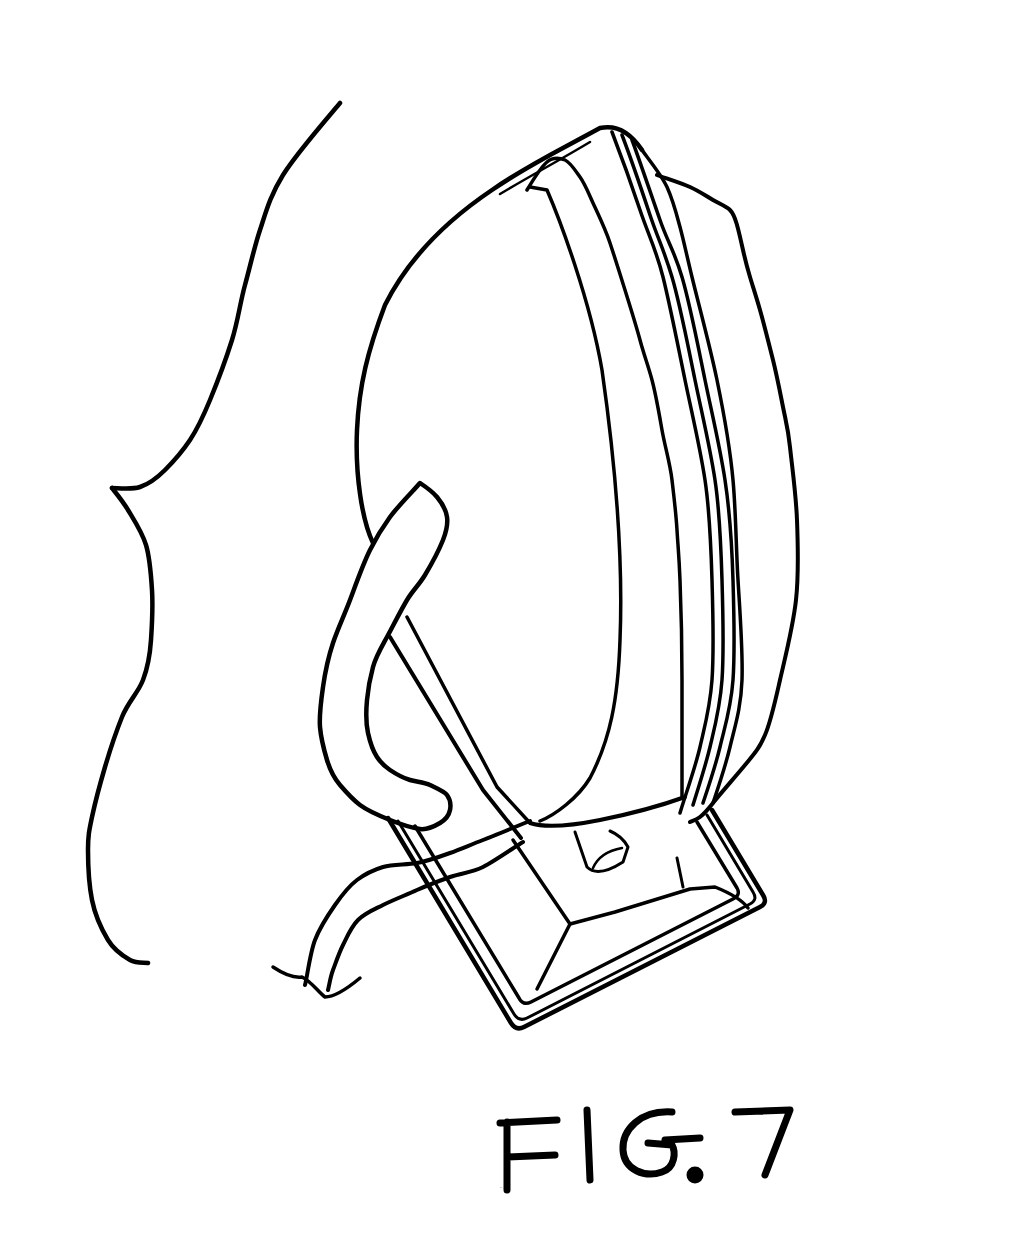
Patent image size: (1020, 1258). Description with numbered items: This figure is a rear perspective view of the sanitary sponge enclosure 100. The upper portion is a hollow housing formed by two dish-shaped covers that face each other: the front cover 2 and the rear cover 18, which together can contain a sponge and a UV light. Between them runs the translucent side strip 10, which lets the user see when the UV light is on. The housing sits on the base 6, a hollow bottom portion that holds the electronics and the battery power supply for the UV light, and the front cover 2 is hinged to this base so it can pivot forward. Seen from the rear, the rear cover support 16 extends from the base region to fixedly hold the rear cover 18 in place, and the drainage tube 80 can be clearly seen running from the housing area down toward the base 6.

The sanitary sponge enclosure 100 is at (173, 533).
The rear cover 18 is at (478, 285).
The translucent side strip 10 is at (653, 143).
The front cover 2 is at (727, 262).
The rear cover support 16 is at (345, 735).
The drainage tube 80 is at (325, 912).
The base 6 is at (707, 860).